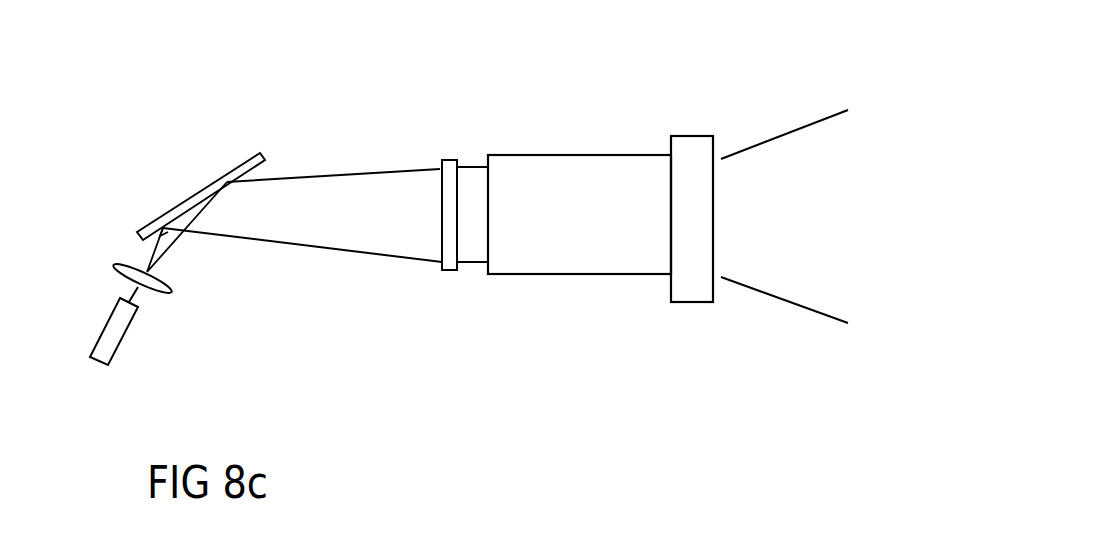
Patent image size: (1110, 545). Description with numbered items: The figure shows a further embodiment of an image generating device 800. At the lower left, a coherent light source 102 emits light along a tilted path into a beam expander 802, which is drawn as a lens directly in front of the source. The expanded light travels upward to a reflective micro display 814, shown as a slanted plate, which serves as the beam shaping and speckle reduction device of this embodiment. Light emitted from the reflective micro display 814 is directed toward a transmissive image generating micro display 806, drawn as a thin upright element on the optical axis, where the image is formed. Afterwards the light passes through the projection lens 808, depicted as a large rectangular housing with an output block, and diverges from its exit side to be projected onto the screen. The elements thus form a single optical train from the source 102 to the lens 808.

The image generating device 800 is at (243, 108).
The reflective micro display 814 is at (195, 196).
The beam expander 802 is at (170, 292).
The coherent light source 102 is at (117, 353).
The transmissive image generating micro display 806 is at (450, 160).
The projection lens 808 is at (597, 154).